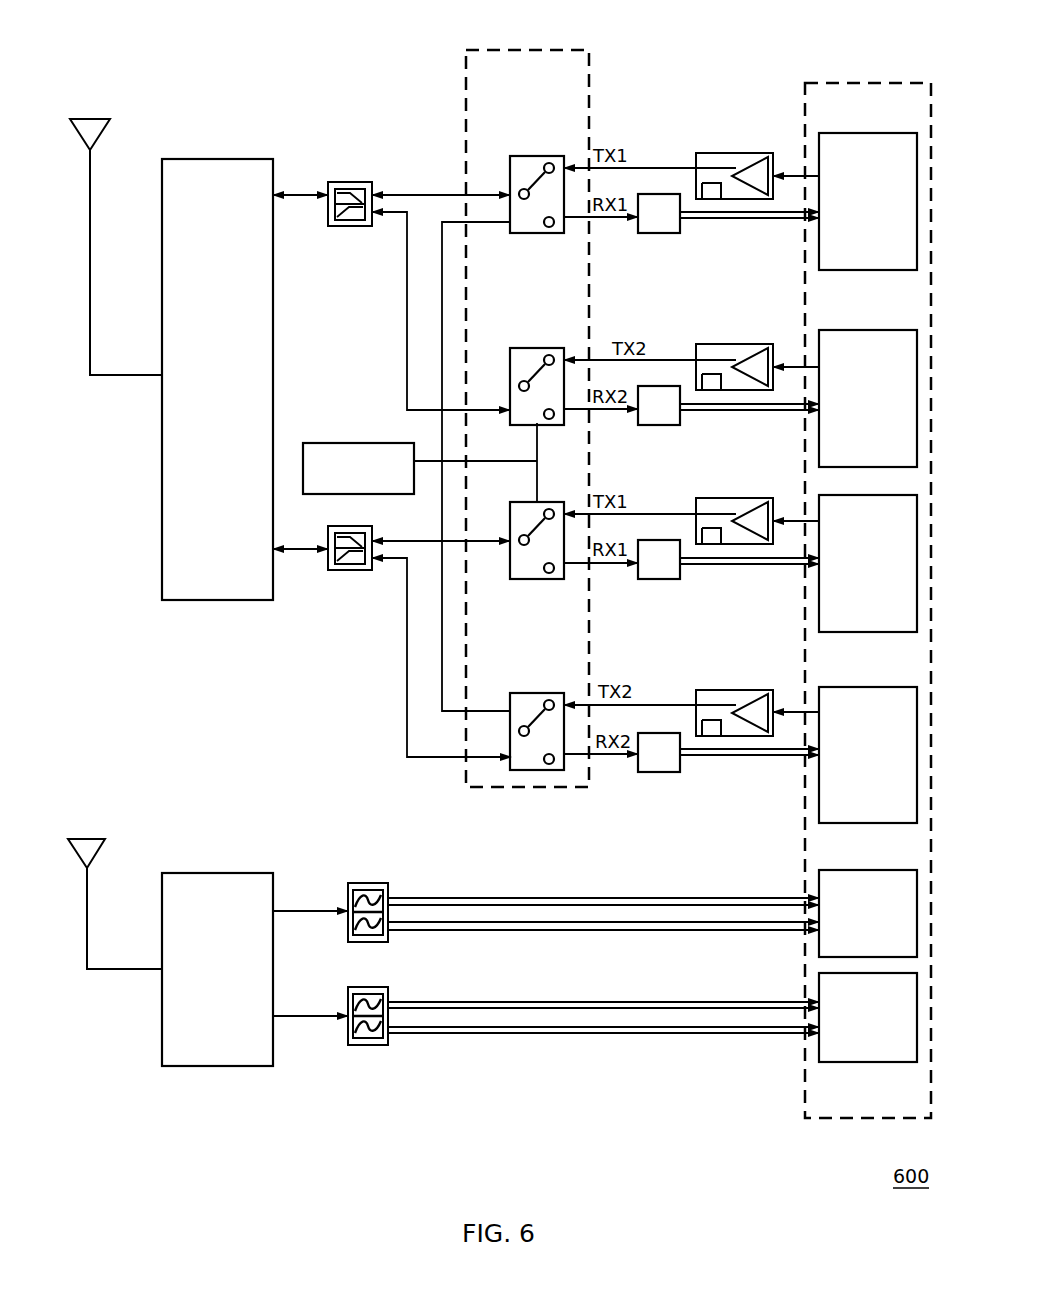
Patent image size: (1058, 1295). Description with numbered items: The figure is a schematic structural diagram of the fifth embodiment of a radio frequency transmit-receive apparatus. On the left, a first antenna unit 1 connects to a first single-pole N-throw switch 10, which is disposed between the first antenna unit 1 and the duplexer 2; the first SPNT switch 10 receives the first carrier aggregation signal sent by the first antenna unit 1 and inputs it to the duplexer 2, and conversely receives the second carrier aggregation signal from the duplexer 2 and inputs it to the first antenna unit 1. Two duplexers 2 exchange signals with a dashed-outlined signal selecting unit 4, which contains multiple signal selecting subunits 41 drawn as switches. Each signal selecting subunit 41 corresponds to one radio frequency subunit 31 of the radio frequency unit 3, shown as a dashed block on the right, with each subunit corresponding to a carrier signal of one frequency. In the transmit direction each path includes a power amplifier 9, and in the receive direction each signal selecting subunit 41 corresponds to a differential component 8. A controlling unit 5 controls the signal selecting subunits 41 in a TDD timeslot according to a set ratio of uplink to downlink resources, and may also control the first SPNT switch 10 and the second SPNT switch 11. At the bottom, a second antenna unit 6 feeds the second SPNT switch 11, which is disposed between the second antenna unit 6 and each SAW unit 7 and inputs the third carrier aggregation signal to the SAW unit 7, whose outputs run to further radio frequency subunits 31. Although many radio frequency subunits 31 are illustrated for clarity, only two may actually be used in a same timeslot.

The first antenna unit 1 is at (95, 119).
The first single-pole N-throw (SPNT) switch 10 is at (217, 159).
The duplexer 2 is at (347, 182).
The signal selecting unit 4 is at (518, 50).
The signal selecting subunit 41 is at (536, 156).
The controlling unit 5 is at (357, 443).
The power amplifier 9 is at (737, 153).
The differential component 8 is at (686, 233).
The radio frequency unit 3 is at (857, 83).
The radio frequency subunit 31 is at (877, 133).
The second antenna unit 6 is at (108, 839).
The second SPNT switch 11 is at (218, 873).
The surface acoustic wave filter (SAW) unit 7 is at (372, 883).